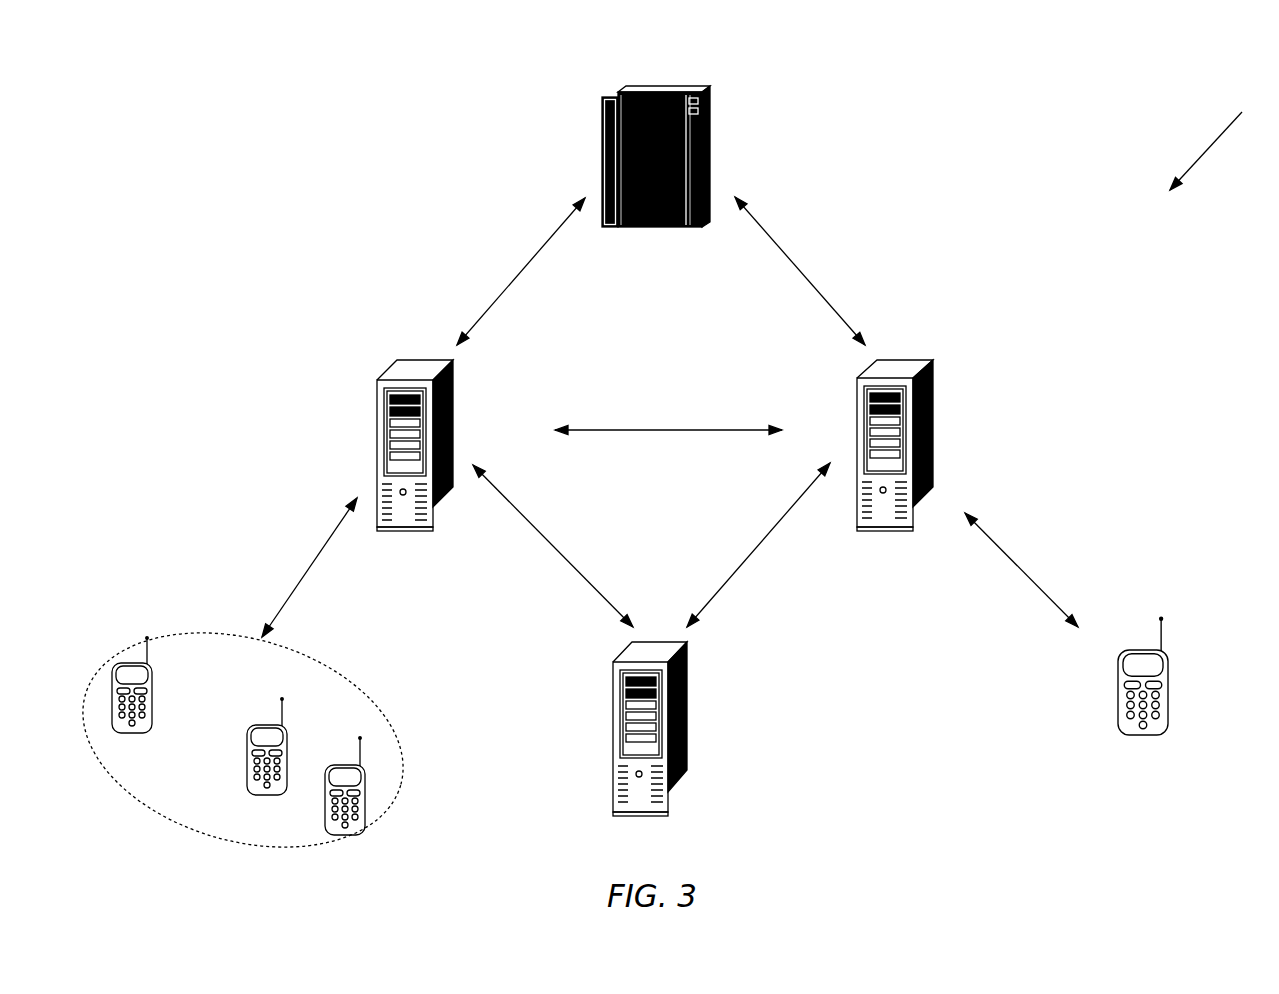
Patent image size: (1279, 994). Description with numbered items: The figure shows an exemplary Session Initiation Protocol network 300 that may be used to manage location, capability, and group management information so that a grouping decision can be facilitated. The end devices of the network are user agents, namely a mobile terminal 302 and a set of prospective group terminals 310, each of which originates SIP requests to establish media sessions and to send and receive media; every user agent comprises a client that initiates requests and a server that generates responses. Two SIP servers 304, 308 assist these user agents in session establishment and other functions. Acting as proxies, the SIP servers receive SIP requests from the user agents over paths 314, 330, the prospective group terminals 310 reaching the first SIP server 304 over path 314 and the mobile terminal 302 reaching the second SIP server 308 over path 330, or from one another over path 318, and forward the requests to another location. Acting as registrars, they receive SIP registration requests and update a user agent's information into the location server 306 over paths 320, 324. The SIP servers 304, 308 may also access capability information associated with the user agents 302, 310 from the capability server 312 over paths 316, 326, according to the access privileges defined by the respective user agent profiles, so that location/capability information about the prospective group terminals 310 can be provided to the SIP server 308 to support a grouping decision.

The Session Initiation Protocol (SIP) network 300 is at (1221, 134).
The mobile terminal 302 is at (1142, 738).
The SIP server 304 is at (406, 362).
The location server 306 is at (635, 812).
The SIP server 308 is at (905, 358).
The prospective group terminals 310 is at (200, 818).
The capability server 312 is at (677, 86).
The path 314 is at (297, 583).
The path 316 is at (558, 228).
The path 318 is at (678, 428).
The path 320 is at (572, 563).
The path 324 is at (773, 528).
The path 326 is at (785, 250).
The path 330 is at (1005, 550).